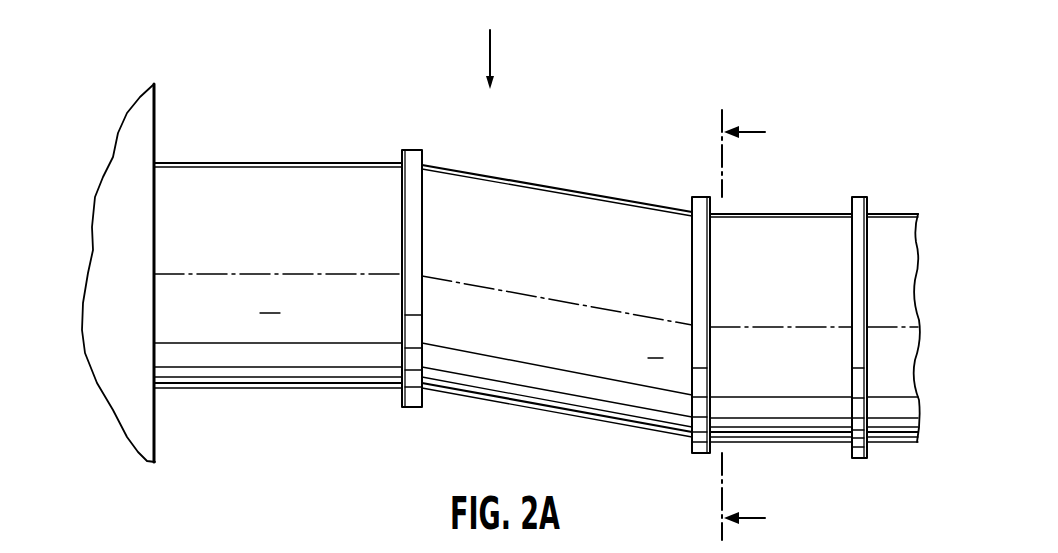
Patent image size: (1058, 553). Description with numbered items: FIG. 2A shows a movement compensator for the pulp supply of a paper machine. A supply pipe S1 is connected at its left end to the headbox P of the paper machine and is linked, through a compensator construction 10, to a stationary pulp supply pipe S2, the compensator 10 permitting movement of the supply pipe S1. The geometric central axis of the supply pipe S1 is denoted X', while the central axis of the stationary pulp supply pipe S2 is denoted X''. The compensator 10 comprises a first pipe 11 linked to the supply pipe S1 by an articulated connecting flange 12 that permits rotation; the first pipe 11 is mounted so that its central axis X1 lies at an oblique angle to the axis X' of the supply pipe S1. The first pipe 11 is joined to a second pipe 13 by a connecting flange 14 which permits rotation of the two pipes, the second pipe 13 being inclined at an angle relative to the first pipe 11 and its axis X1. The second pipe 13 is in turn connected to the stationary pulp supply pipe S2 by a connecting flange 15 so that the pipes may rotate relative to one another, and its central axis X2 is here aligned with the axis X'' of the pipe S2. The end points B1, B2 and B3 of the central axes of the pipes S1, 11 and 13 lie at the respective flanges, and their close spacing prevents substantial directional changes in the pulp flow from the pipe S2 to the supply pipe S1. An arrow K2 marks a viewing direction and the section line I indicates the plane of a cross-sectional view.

The compensator construction 10 is at (320, 102).
The first pipe 11 is at (525, 190).
The articulated connecting flange 12 is at (409, 142).
The second pipe 13 is at (797, 228).
The connecting flange 14 is at (701, 188).
The connecting flange 15 is at (859, 188).
The headbox P is at (114, 162).
The supply pipe S1 is at (279, 166).
The stationary pulp supply pipe S2 is at (893, 216).
The central axis of the supply pipe X' is at (278, 246).
The central axis of the first pipe X1 is at (548, 297).
The central axis of the second pipe X2 is at (758, 326).
The central axis of the stationary pulp supply pipe X'' is at (892, 300).
The end point B1 is at (417, 266).
The end point B2 is at (697, 325).
The end point B3 is at (857, 327).
The viewing direction K2 is at (492, 47).
The section line I is at (752, 325).